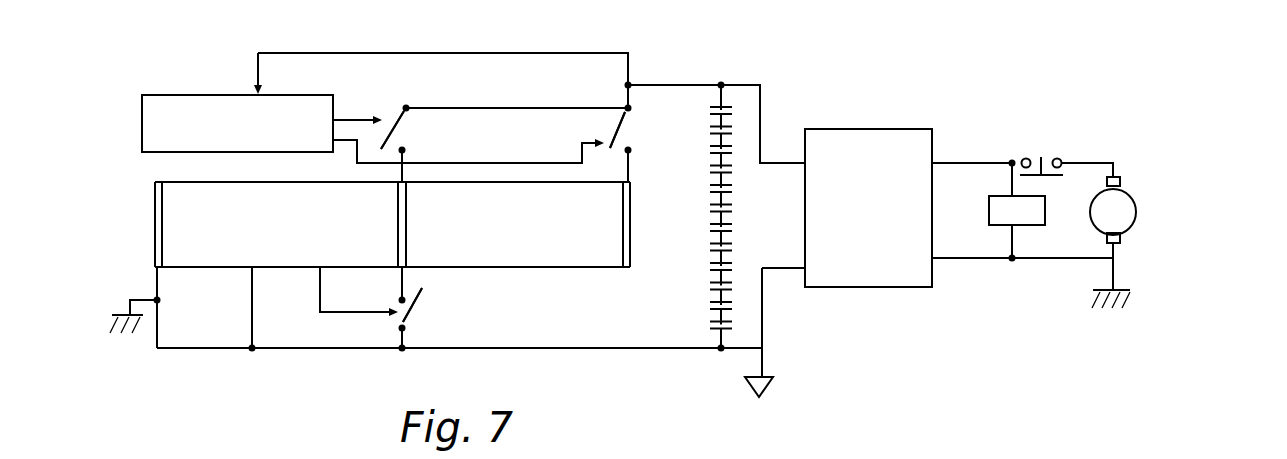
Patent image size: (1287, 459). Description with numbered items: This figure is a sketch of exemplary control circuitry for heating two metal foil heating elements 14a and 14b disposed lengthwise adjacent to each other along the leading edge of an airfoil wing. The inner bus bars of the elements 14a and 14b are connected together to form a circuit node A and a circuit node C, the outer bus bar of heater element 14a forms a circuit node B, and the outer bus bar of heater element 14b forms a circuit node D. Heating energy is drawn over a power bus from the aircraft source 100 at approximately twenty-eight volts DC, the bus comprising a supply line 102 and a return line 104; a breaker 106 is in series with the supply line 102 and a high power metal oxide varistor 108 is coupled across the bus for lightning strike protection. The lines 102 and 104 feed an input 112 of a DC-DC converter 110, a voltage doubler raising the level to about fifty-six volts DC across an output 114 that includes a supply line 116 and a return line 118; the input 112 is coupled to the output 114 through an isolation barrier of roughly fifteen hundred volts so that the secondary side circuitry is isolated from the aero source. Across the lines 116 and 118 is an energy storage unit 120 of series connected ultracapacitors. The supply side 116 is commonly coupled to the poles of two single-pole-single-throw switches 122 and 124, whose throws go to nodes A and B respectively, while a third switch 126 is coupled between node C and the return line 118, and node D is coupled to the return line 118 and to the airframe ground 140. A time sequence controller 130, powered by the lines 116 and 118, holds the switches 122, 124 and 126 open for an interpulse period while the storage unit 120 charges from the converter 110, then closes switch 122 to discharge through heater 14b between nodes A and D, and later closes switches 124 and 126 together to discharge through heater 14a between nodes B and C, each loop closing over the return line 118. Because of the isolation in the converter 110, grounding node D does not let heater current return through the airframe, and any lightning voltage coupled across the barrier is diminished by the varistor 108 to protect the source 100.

The aircraft source 100 is at (1137, 202).
The supply line 102 is at (1088, 162).
The return line 104 is at (1022, 262).
The breaker 106 is at (1041, 157).
The metal oxide varistor (MOV) 108 is at (1048, 212).
The DC-DC converter 110 is at (886, 128).
The input 112 is at (944, 255).
The output 114 is at (794, 166).
The supply line 116 is at (762, 103).
The return line 118 is at (762, 308).
The energy storage unit 120 is at (689, 216).
The single-pole-single-throw switch 122 is at (383, 108).
The single-pole-single-throw switch 124 is at (603, 128).
The third single-pole-single-throw switch 126 is at (413, 310).
The time sequence controller 130 is at (205, 93).
The airframe ground 140 is at (122, 335).
The heating element 14a is at (545, 260).
The heating element 14b is at (280, 260).
The circuit node A is at (412, 178).
The circuit node B is at (637, 182).
The circuit node C is at (412, 277).
The circuit node D is at (155, 272).